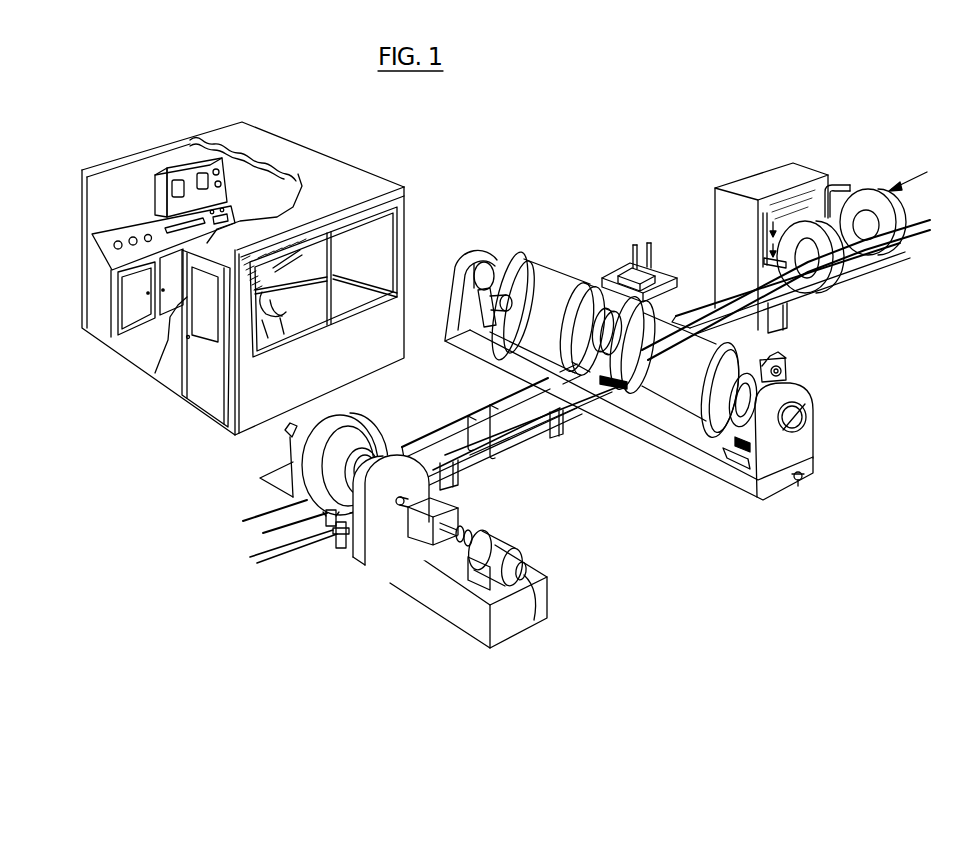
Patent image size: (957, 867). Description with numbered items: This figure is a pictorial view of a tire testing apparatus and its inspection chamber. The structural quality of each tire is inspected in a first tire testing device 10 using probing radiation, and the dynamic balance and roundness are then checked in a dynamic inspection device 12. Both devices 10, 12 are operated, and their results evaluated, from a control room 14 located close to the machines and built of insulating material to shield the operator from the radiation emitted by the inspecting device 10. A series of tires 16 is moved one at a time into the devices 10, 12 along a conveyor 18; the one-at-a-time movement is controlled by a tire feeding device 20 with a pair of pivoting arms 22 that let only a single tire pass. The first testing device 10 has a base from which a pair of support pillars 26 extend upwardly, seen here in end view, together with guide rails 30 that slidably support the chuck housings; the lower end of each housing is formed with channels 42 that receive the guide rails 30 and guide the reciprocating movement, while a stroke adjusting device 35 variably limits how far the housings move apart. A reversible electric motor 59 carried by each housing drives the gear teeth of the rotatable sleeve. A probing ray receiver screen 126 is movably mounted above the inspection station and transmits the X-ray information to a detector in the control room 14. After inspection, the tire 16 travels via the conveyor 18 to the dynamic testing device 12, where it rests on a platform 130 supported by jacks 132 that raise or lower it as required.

The first tire testing device 10 is at (594, 268).
The dynamic inspection device 12 is at (387, 436).
The control room 14 is at (365, 151).
The tires 16 is at (870, 256).
The conveyor 18 is at (740, 325).
The tire feeding device 20 is at (755, 178).
The pivoting arms 22 is at (838, 182).
The support pillars 26 is at (503, 252).
The guide rails 30 is at (742, 450).
The stroke adjusting device 35 is at (801, 482).
The channels 42 is at (627, 385).
The reversible electric motor 59 is at (503, 298).
The probing ray receiver screen 126 is at (660, 268).
The platform 130 is at (346, 550).
The jacks 132 is at (338, 542).